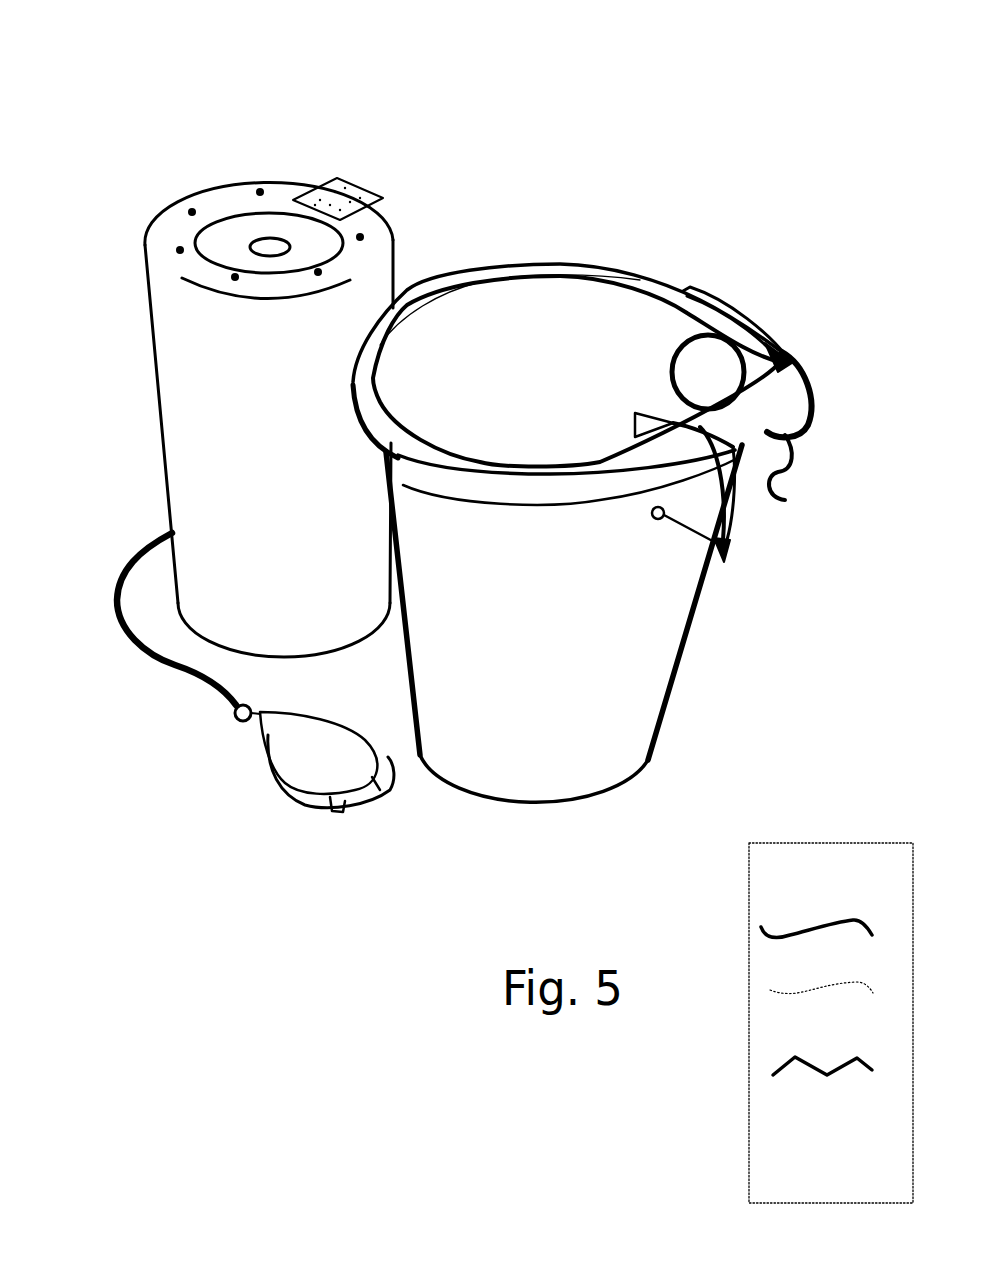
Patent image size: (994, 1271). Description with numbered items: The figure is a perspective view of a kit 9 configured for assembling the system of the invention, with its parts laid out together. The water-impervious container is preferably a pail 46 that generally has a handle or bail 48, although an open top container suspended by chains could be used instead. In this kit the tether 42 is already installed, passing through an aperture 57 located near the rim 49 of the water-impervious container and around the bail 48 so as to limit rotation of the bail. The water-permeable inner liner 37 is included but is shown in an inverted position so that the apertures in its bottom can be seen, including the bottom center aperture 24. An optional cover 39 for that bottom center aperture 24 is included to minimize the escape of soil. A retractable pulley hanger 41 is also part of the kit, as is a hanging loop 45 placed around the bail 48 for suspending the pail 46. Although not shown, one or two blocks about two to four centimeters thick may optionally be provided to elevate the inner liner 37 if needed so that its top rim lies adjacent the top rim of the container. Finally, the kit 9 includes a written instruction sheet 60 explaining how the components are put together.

The kit 9 is at (243, 913).
The bottom center aperture 24 is at (267, 250).
The water-permeable inner liner 37 is at (177, 405).
The cover 39 is at (328, 172).
The retractable pulley hanger 41 is at (298, 797).
The tether 42 is at (743, 528).
The hanging loop 45 is at (808, 398).
The pail 46 is at (652, 657).
The bail 48 is at (738, 307).
The rim 49 is at (553, 272).
The aperture 57 is at (665, 523).
The written instruction sheet 60 is at (800, 845).